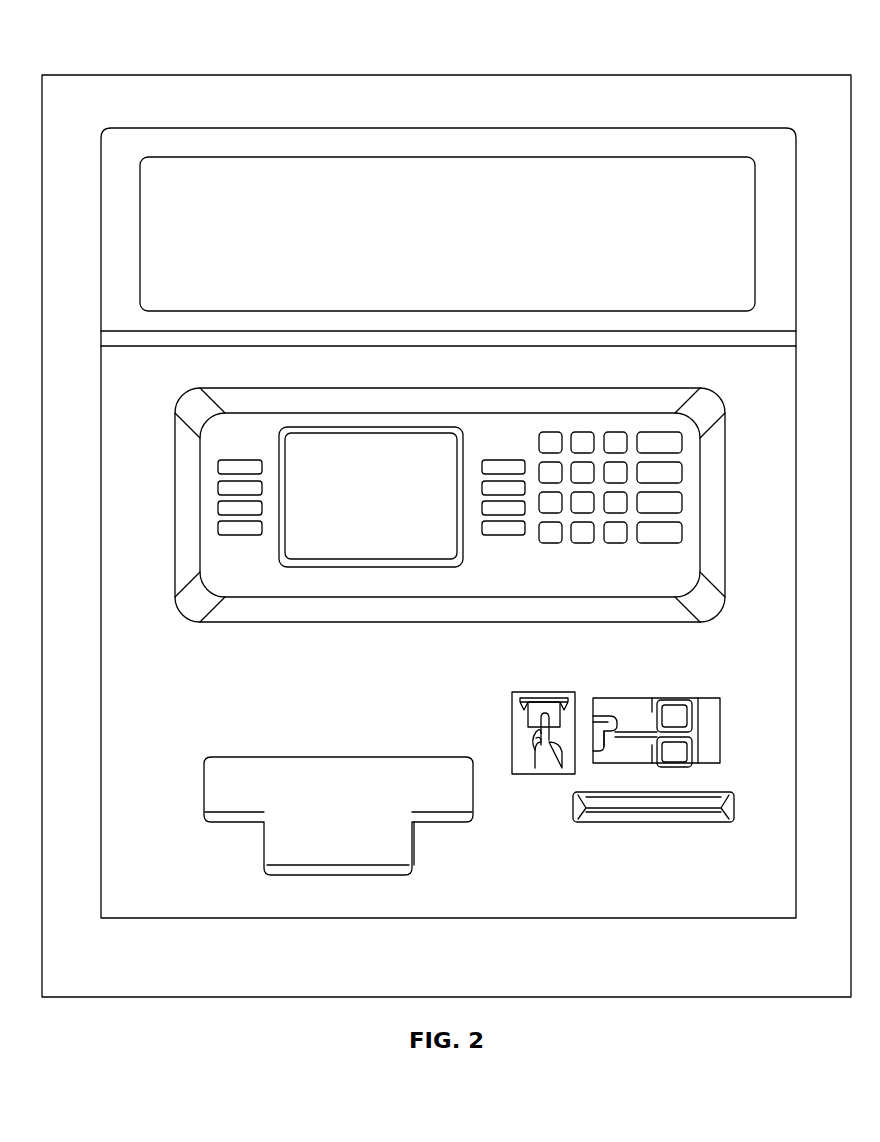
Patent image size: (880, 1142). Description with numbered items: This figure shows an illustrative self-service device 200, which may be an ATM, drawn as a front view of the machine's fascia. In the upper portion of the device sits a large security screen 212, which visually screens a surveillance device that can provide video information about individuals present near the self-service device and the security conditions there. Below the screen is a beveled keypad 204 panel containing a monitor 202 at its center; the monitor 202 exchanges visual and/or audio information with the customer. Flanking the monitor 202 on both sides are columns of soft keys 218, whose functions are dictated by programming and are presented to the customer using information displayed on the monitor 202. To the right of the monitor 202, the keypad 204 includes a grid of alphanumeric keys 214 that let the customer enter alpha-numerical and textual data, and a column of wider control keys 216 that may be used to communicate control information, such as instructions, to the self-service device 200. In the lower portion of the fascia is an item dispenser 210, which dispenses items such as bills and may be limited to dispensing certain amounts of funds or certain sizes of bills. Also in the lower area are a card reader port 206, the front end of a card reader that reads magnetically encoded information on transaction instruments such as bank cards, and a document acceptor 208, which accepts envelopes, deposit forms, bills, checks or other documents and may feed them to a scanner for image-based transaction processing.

The self-service device 200 is at (100, 44).
The monitor 202 is at (400, 430).
The keypad 204 is at (497, 580).
The card reader port 206 is at (705, 698).
The document acceptor 208 is at (717, 792).
The item dispenser 210 is at (230, 755).
The security screen 212 is at (677, 155).
The alphanumeric keys 214 is at (553, 547).
The control keys 216 is at (665, 425).
The soft keys 218 is at (243, 450).